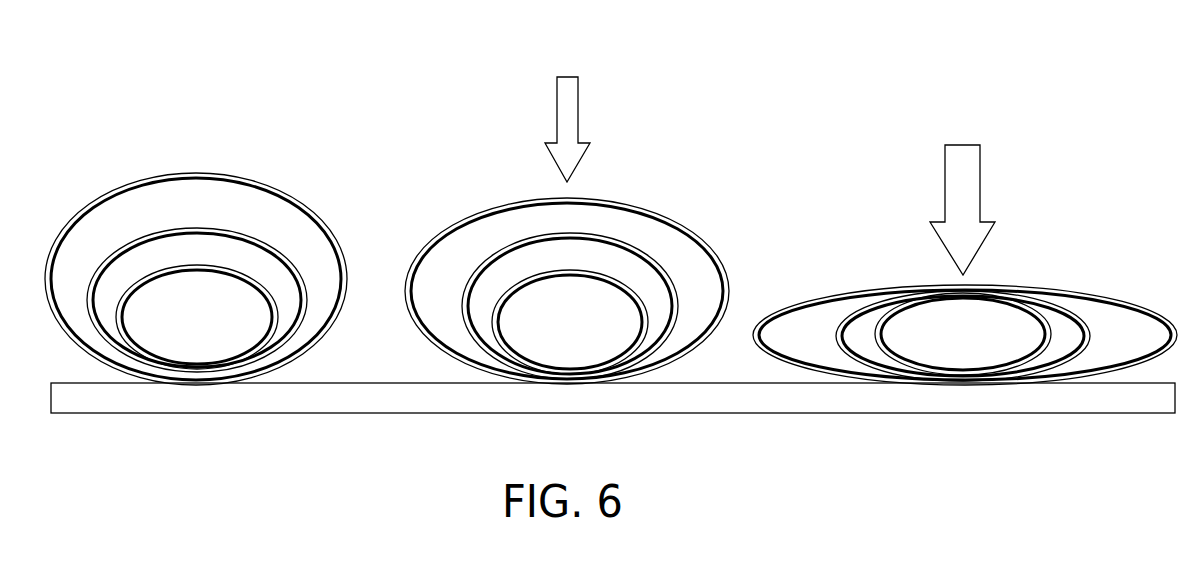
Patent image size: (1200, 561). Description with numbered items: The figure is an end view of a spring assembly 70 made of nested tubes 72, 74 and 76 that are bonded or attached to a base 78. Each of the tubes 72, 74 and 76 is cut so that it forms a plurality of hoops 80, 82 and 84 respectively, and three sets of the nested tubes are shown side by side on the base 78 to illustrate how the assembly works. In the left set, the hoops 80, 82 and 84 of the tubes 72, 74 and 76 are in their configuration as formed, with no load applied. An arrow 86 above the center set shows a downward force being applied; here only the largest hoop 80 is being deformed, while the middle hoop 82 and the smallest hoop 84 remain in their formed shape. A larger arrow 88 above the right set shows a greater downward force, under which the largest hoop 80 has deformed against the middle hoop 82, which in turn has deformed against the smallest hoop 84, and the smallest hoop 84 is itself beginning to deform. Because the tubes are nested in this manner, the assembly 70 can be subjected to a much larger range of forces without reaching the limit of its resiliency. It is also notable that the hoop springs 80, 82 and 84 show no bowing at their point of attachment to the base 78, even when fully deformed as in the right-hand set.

The assembly 70 is at (674, 67).
The tube 72 is at (305, 193).
The tube 74 is at (298, 258).
The tube 76 is at (283, 313).
The base 78 is at (670, 402).
The hoop 80 is at (92, 200).
The hoop 82 is at (128, 242).
The hoop 84 is at (130, 308).
The arrow 86 is at (572, 108).
The arrow 88 is at (977, 173).